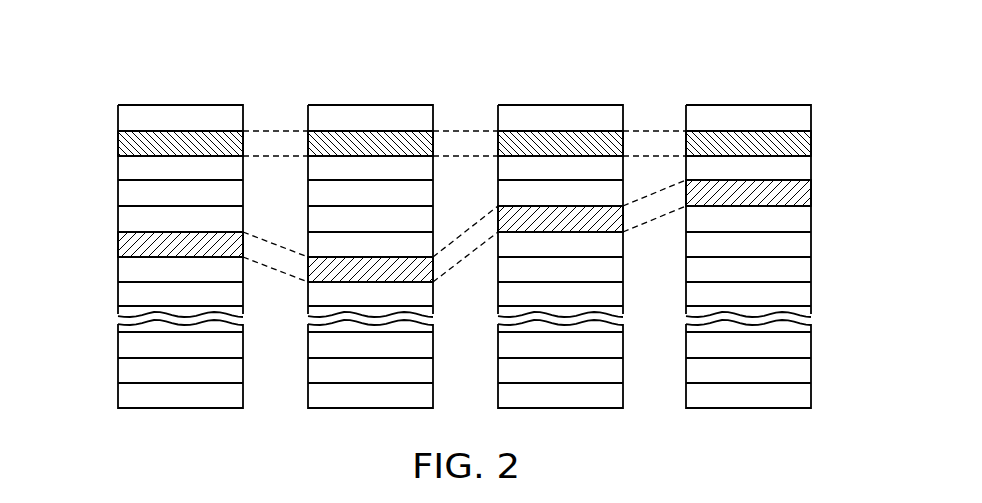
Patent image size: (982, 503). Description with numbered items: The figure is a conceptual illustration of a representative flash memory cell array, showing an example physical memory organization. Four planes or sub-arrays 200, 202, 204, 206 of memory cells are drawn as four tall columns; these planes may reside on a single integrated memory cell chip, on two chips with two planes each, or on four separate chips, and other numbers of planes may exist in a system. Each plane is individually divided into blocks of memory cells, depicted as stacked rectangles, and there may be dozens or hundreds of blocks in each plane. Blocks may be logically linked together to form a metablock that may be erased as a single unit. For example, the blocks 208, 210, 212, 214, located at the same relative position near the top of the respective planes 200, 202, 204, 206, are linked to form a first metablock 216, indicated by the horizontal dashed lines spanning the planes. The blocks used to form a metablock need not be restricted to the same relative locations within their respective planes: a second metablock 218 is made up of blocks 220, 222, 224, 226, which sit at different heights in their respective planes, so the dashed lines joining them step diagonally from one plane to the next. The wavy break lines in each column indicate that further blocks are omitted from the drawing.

The plane 200 is at (181, 97).
The plane 202 is at (373, 97).
The plane 204 is at (560, 97).
The plane 206 is at (784, 104).
The block 208 is at (163, 147).
The block 210 is at (350, 143).
The block 212 is at (540, 143).
The block 214 is at (775, 145).
The first metablock 216 is at (655, 128).
The second metablock 218 is at (657, 189).
The block 220 is at (158, 247).
The block 222 is at (347, 268).
The block 224 is at (547, 215).
The block 226 is at (775, 192).